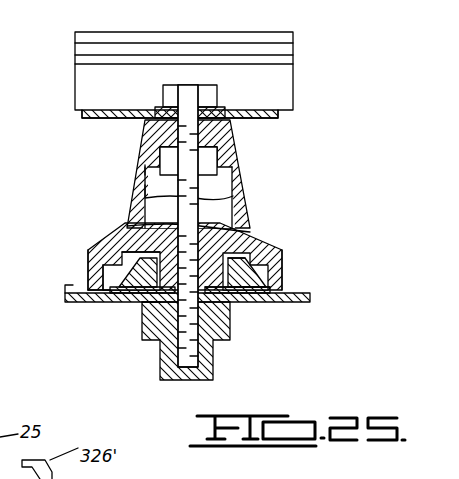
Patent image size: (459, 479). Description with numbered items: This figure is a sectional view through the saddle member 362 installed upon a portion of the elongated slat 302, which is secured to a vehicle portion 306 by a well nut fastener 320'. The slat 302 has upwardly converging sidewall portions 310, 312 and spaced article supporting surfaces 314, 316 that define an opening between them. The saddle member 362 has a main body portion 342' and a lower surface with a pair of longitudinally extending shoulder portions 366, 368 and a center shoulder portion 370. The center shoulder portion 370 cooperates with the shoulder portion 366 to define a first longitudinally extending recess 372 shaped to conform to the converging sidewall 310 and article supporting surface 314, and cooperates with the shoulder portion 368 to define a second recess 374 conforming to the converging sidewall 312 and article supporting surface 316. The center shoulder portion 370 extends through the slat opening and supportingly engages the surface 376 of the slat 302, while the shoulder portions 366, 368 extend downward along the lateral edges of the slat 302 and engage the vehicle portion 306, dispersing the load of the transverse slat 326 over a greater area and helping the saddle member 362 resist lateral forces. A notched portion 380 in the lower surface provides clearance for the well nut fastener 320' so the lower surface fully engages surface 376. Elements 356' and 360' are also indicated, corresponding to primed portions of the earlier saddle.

The transverse slat 326 is at (270, 86).
The main body portion 342' is at (227, 130).
The saddle member 362 is at (243, 163).
The article supporting surface 314 is at (249, 210).
The center shoulder portion 370 is at (236, 258).
The first longitudinally extending recess 372 is at (268, 262).
The elongated slat 302 is at (283, 268).
The shoulder portion 366 is at (268, 290).
The upwardly converging sidewall portion 310 is at (285, 278).
The vehicle portion 306 is at (63, 288).
The well nut fastener 320' is at (217, 341).
The notched portion 380 is at (203, 308).
The surface of slat 376 is at (132, 302).
The second recess 374 is at (96, 302).
The shoulder portion 368 is at (102, 272).
The upwardly converging sidewall portion 312 is at (88, 250).
The article supporting surface 316 is at (133, 253).
The cone inner wall 356' is at (105, 183).
The cone cavity 360' is at (95, 159).